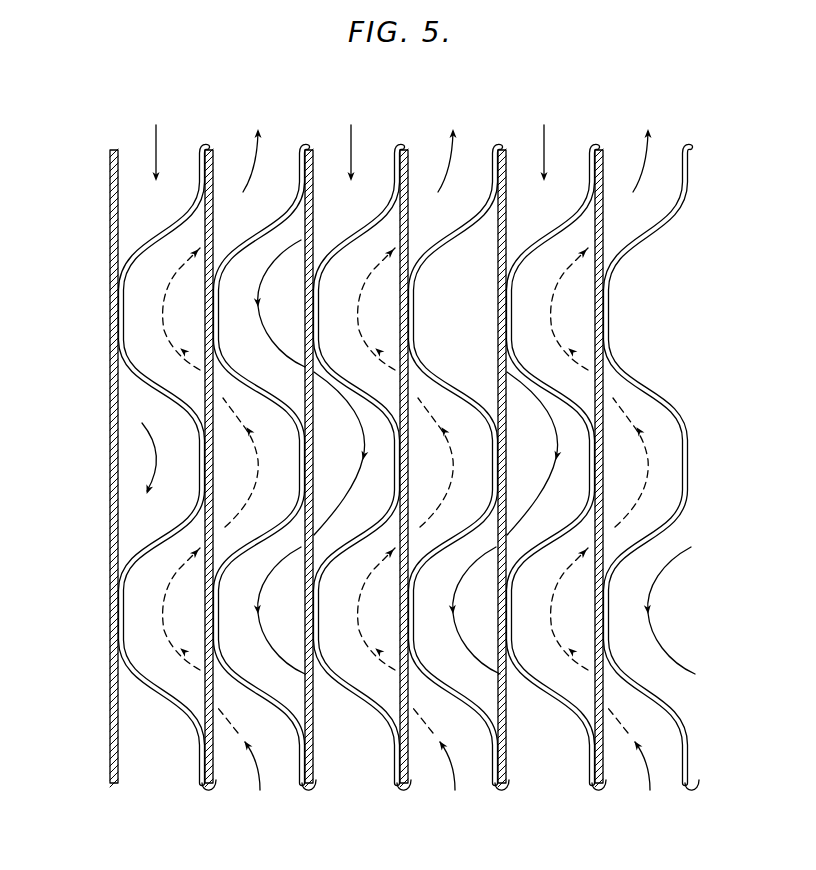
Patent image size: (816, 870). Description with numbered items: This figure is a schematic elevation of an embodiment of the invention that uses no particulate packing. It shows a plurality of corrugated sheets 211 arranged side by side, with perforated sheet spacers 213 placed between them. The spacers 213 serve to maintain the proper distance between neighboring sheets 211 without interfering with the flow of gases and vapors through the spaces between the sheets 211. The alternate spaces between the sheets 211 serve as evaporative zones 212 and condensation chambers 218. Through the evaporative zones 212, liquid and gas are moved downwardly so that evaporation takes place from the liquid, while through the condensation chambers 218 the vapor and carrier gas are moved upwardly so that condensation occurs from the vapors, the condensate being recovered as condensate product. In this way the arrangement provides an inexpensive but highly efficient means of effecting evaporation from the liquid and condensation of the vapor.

The corrugated sheet 211 is at (687, 167).
The evaporative zone 212 is at (120, 203).
The perforated sheet spacer 213 is at (110, 730).
The condensation chamber 218 is at (222, 228).